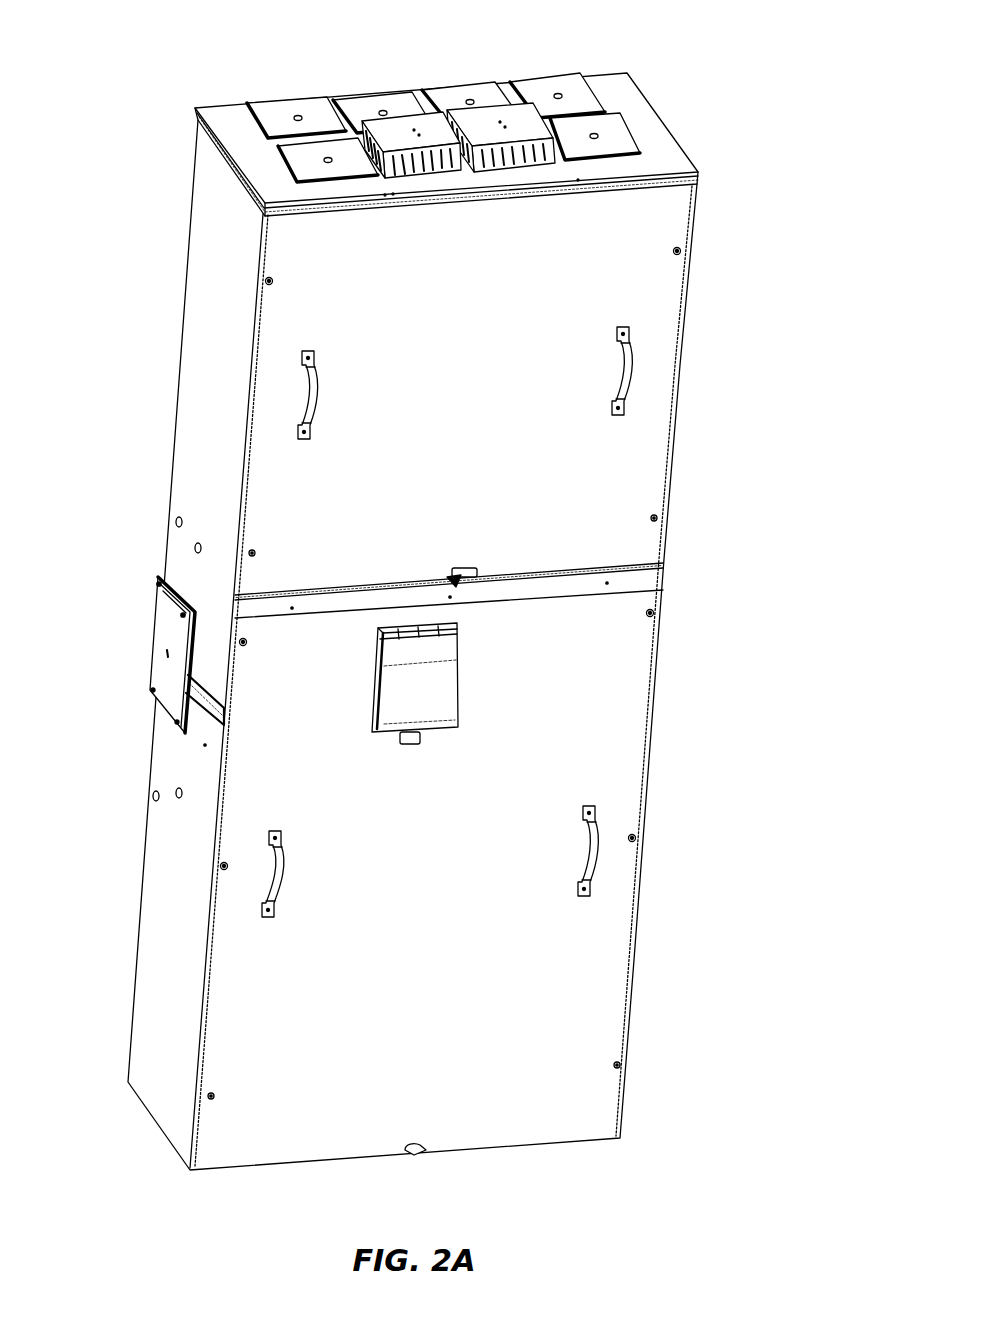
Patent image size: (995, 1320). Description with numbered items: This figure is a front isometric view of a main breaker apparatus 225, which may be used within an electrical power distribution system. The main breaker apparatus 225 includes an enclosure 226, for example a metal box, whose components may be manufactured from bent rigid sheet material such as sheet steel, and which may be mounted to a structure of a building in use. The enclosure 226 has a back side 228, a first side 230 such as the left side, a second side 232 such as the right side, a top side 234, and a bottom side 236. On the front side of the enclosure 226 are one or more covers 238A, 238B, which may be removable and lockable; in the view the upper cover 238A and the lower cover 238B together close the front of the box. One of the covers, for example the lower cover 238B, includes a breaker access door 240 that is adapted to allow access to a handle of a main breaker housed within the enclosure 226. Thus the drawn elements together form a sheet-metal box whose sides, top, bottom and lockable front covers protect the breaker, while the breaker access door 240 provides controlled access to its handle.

The main breaker apparatus 225 is at (423, 613).
The enclosure 226 is at (670, 556).
The back side 228 is at (175, 452).
The first side 230 is at (179, 757).
The second side 232 is at (649, 710).
The top side 234 is at (607, 88).
The bottom side 236 is at (538, 1143).
The cover 238A is at (598, 275).
The cover 238B is at (467, 879).
The breaker access door 240 is at (458, 690).